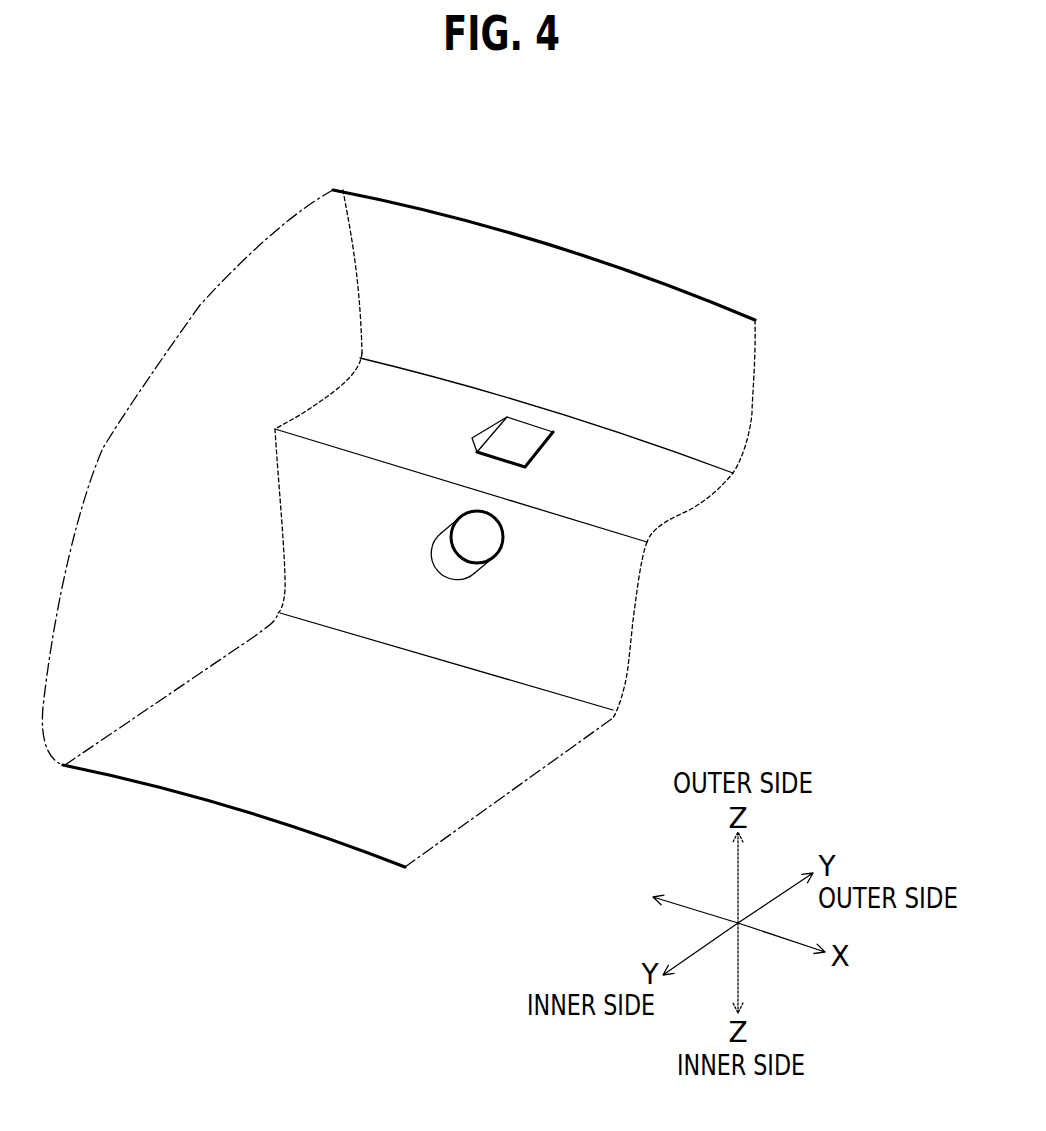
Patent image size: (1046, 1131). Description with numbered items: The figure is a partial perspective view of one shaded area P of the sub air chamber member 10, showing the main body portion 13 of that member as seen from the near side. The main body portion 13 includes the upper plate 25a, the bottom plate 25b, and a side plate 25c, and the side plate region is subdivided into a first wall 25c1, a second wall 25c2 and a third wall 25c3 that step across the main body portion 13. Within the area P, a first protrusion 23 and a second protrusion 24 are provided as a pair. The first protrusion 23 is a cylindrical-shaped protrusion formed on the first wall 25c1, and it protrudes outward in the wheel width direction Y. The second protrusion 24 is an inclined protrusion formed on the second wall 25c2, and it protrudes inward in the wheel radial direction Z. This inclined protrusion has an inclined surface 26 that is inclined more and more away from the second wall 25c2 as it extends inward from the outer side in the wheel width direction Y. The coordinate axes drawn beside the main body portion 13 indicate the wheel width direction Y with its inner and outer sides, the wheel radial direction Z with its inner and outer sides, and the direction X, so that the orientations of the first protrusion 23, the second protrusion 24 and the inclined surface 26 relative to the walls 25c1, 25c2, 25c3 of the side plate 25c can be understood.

The sub air chamber member 10 is at (501, 524).
The main body portion 13 is at (501, 524).
The shaded area P is at (665, 280).
The first protrusion 23 is at (478, 537).
The second protrusion 24 is at (520, 453).
The upper plate 25a is at (258, 216).
The bottom plate 25b is at (308, 768).
The side plate 25c is at (617, 519).
The first wall 25c1 is at (600, 622).
The second wall 25c2 is at (658, 490).
The third wall 25c3 is at (700, 393).
The inclined surface 26 is at (507, 447).